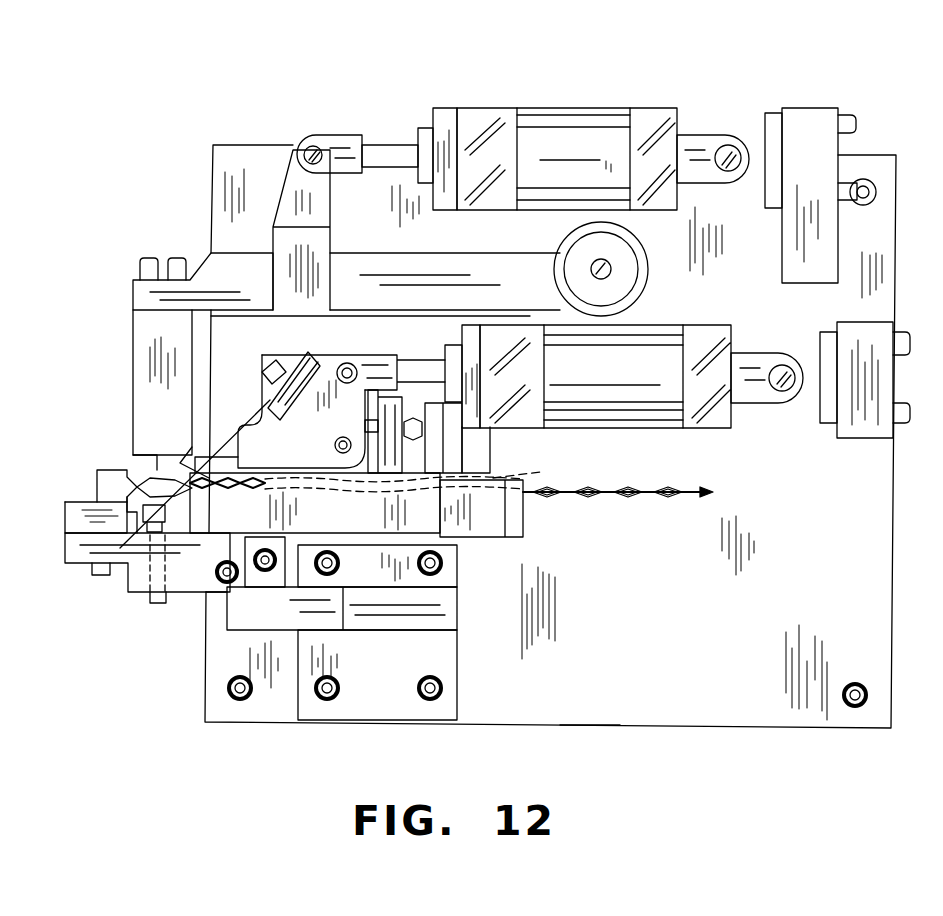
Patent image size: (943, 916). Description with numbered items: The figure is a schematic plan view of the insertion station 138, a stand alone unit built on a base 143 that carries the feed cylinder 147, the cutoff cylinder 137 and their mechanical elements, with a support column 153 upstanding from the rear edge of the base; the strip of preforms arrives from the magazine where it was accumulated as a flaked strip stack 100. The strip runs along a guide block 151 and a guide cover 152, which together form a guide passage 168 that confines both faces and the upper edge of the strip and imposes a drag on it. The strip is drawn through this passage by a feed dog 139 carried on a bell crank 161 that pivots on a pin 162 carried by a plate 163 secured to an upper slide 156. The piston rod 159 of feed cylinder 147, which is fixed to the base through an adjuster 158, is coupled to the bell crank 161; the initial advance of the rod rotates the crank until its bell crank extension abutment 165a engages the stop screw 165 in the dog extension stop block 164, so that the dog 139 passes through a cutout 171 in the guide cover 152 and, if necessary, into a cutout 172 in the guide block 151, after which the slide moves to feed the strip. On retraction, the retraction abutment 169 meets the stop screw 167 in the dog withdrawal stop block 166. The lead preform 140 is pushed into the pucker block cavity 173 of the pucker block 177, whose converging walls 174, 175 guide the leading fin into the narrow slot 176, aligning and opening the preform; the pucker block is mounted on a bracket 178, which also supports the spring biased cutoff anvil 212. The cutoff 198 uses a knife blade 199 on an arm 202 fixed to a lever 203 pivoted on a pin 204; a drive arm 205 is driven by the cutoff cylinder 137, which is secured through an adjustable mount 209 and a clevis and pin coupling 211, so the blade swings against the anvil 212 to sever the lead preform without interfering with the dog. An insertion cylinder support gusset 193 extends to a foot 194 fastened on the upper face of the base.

The flaked strip stack 100 is at (588, 497).
The cutoff cylinder 137 is at (595, 128).
The insertion station 138 is at (728, 667).
The feed dog 139 is at (185, 462).
The lead preform 140 is at (122, 547).
The base 143 is at (590, 725).
The feed cylinder 147 is at (645, 408).
The guide block 151 is at (252, 560).
The guide cover 152 is at (237, 450).
The support column 153 is at (878, 440).
The upper slide 156 is at (485, 438).
The adjuster 158 is at (822, 428).
The piston rod 159 is at (430, 370).
The bell crank 161 is at (352, 393).
The pin 162 is at (343, 455).
The plate 163 is at (436, 484).
The dog extension stop block 164 is at (300, 366).
The stop screw 165 is at (318, 382).
The bell crank extension abutment 165a is at (318, 380).
The dog withdrawal stop block 166 is at (392, 445).
The stop screw 167 is at (425, 436).
The guide passage 168 is at (495, 482).
The retraction abutment 169 is at (363, 427).
The cutout 171 is at (218, 483).
The cutout 172 is at (177, 497).
The pucker block cavity 173 is at (160, 478).
The wall 174 is at (84, 495).
The wall 175 is at (138, 480).
The slot 176 is at (118, 488).
The pucker block 177 is at (82, 515).
The bracket 178 is at (135, 600).
The insertion cylinder support gusset 193 is at (370, 625).
The foot 194 is at (350, 714).
The cutoff 198 is at (527, 81).
The knife blade 199 is at (150, 445).
The arm 202 is at (133, 337).
The lever 203 is at (228, 262).
The pin 204 is at (590, 243).
The drive arm 205 is at (322, 192).
The adjustable mount 209 is at (770, 113).
The clevis and pin coupling 211 is at (730, 150).
The cutoff anvil 212 is at (178, 563).